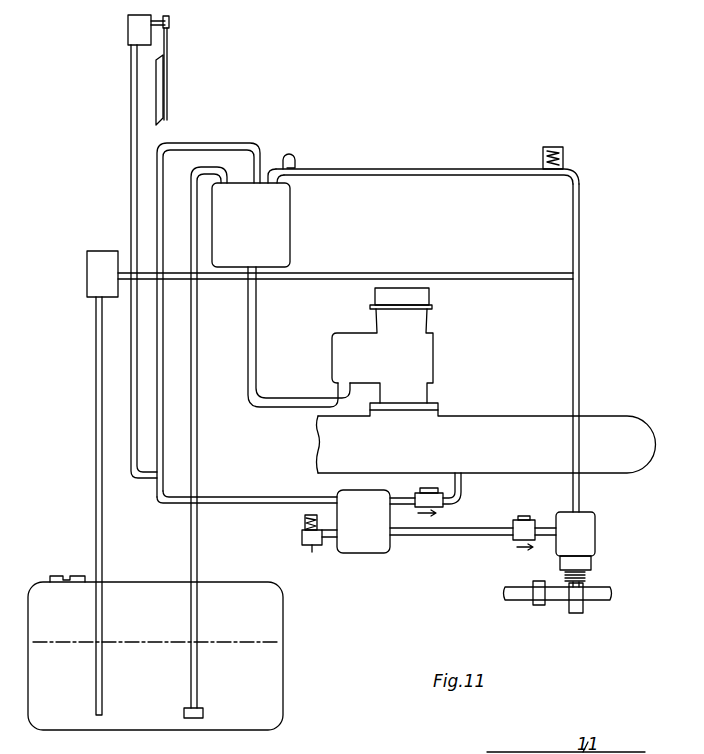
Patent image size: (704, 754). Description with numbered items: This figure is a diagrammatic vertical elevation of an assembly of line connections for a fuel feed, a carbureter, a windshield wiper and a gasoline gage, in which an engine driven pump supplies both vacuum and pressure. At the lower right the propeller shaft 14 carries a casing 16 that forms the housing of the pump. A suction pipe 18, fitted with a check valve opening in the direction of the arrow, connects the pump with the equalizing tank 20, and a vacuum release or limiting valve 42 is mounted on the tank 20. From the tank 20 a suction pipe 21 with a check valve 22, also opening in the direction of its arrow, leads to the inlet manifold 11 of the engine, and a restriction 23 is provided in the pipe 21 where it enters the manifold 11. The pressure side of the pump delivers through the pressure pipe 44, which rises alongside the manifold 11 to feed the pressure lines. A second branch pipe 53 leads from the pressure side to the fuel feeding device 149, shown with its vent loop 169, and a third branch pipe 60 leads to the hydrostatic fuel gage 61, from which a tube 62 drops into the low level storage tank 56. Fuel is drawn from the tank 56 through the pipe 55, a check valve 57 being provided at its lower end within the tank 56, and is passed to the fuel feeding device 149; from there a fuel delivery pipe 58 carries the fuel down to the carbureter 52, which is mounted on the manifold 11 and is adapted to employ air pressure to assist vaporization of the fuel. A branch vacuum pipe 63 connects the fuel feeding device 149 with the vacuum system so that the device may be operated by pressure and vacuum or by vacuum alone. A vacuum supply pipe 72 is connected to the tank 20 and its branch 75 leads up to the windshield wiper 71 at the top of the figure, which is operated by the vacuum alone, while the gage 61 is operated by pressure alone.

The inlet manifold 11 is at (617, 417).
The propeller shaft 14 is at (597, 602).
The casing 16 is at (595, 528).
The suction pipe 18 is at (488, 538).
The equalizing tank 20 is at (368, 553).
The suction pipe 21 is at (400, 497).
The check valve 22 is at (441, 506).
The restriction 23 is at (463, 486).
The vacuum release or limiting valve 42 is at (312, 546).
The pressure pipe 44 is at (580, 355).
The carbureter 52 is at (425, 337).
The second branch pipe 53 is at (385, 167).
The pipe 55 is at (197, 574).
The storage tank 56 is at (283, 626).
The check valve 57 is at (203, 718).
The fuel delivery pipe 58 is at (257, 317).
The third branch pipe 60 is at (352, 272).
The hydrostatic fuel gage 61 is at (87, 282).
The tube 62 is at (102, 556).
The branch vacuum pipe 63 is at (163, 413).
The windshield wiper 71 is at (128, 36).
The vacuum supply pipe 72 is at (250, 499).
The branch 75 is at (132, 402).
The reservoir 149 is at (290, 229).
The vent loop 169 is at (292, 167).